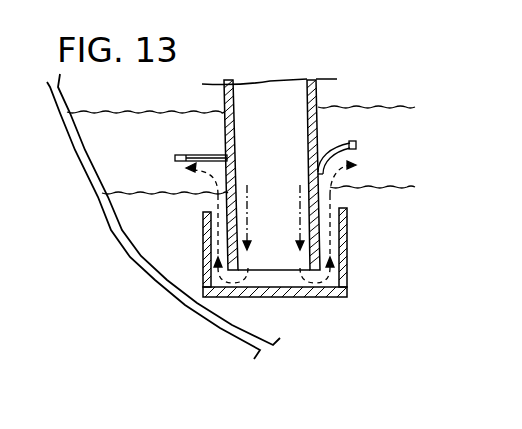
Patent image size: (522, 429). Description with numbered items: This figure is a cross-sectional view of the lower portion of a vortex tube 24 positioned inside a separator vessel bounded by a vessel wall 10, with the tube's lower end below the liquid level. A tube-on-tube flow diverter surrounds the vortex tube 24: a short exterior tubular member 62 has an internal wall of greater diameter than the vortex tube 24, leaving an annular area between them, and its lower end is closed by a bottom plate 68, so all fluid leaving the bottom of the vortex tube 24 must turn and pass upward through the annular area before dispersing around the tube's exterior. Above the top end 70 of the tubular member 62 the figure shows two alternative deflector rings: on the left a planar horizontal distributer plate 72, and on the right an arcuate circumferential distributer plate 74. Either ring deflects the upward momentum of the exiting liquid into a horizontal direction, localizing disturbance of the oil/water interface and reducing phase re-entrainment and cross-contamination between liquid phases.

The vessel wall 10 is at (160, 288).
The vortex tube 24 is at (318, 95).
The exterior tubular member 62 is at (348, 238).
The bottom plate 68 is at (277, 300).
The top end 70 is at (203, 212).
The horizontal distributer plate 72 is at (190, 155).
The arcuate circumferential distributer plate 74 is at (356, 143).